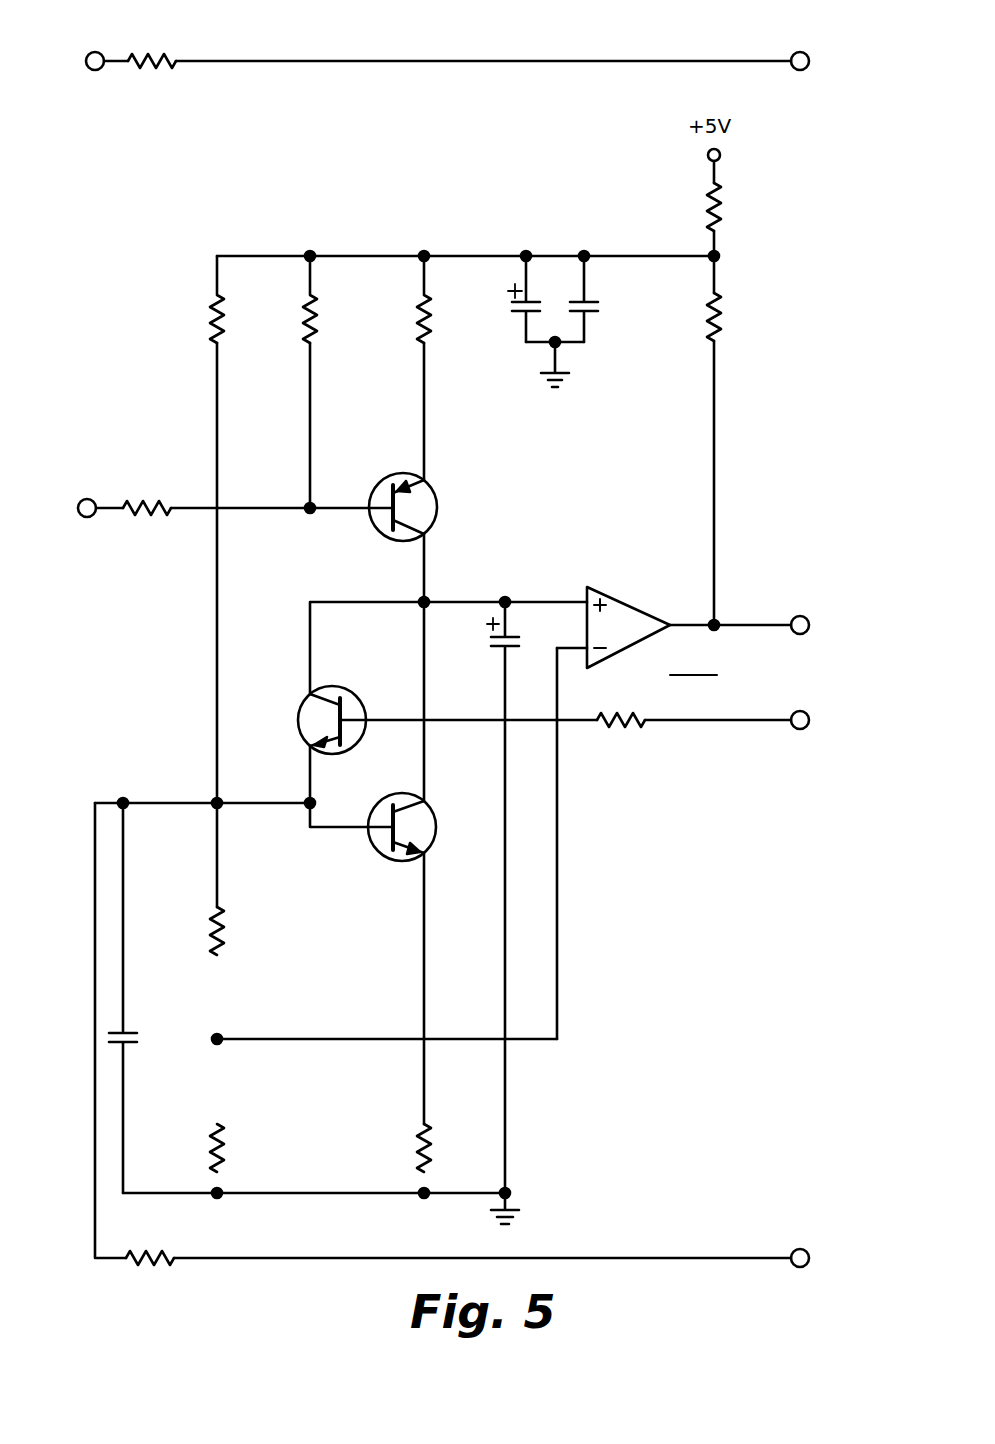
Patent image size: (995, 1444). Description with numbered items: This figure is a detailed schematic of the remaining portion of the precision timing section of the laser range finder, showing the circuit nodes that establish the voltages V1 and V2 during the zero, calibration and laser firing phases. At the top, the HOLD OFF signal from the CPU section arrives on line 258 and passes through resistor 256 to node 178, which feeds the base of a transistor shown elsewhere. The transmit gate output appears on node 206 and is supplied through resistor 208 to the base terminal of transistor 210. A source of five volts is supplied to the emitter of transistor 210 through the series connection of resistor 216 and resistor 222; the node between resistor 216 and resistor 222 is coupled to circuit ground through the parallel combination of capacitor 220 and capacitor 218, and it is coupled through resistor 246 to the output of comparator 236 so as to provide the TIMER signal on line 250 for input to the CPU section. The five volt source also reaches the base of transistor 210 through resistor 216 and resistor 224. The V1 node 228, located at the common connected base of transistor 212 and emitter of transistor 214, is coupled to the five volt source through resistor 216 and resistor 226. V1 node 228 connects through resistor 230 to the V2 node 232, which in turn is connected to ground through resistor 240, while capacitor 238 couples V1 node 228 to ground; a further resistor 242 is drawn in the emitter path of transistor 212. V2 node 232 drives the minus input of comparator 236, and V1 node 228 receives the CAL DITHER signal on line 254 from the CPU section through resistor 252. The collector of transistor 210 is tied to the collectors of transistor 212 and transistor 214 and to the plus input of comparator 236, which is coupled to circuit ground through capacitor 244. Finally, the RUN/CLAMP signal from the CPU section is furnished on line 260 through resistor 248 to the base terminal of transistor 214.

The node 178 is at (112, 58).
The resistor 256 is at (162, 58).
The line 258 is at (535, 58).
The resistor 216 is at (722, 206).
The resistor 246 is at (722, 318).
The resistor 226 is at (213, 302).
The resistor 224 is at (303, 310).
The resistor 222 is at (432, 320).
The capacitor 220 is at (515, 303).
The capacitor 218 is at (590, 300).
The node 206 is at (100, 503).
The resistor 208 is at (143, 504).
The transistor 210 is at (430, 487).
The capacitor 244 is at (496, 652).
The comparator 236 is at (662, 615).
The line 250 is at (805, 614).
The resistor 248 is at (600, 735).
The line 260 is at (712, 722).
The transistor 214 is at (360, 700).
The V1 node 228 is at (210, 810).
The transistor 212 is at (375, 862).
The capacitor 238 is at (130, 1042).
The resistor 230 is at (224, 926).
The V2 node 232 is at (220, 1037).
The resistor 240 is at (225, 1150).
The resistor 242 is at (420, 1145).
The resistor 252 is at (152, 1264).
The line 254 is at (560, 1255).